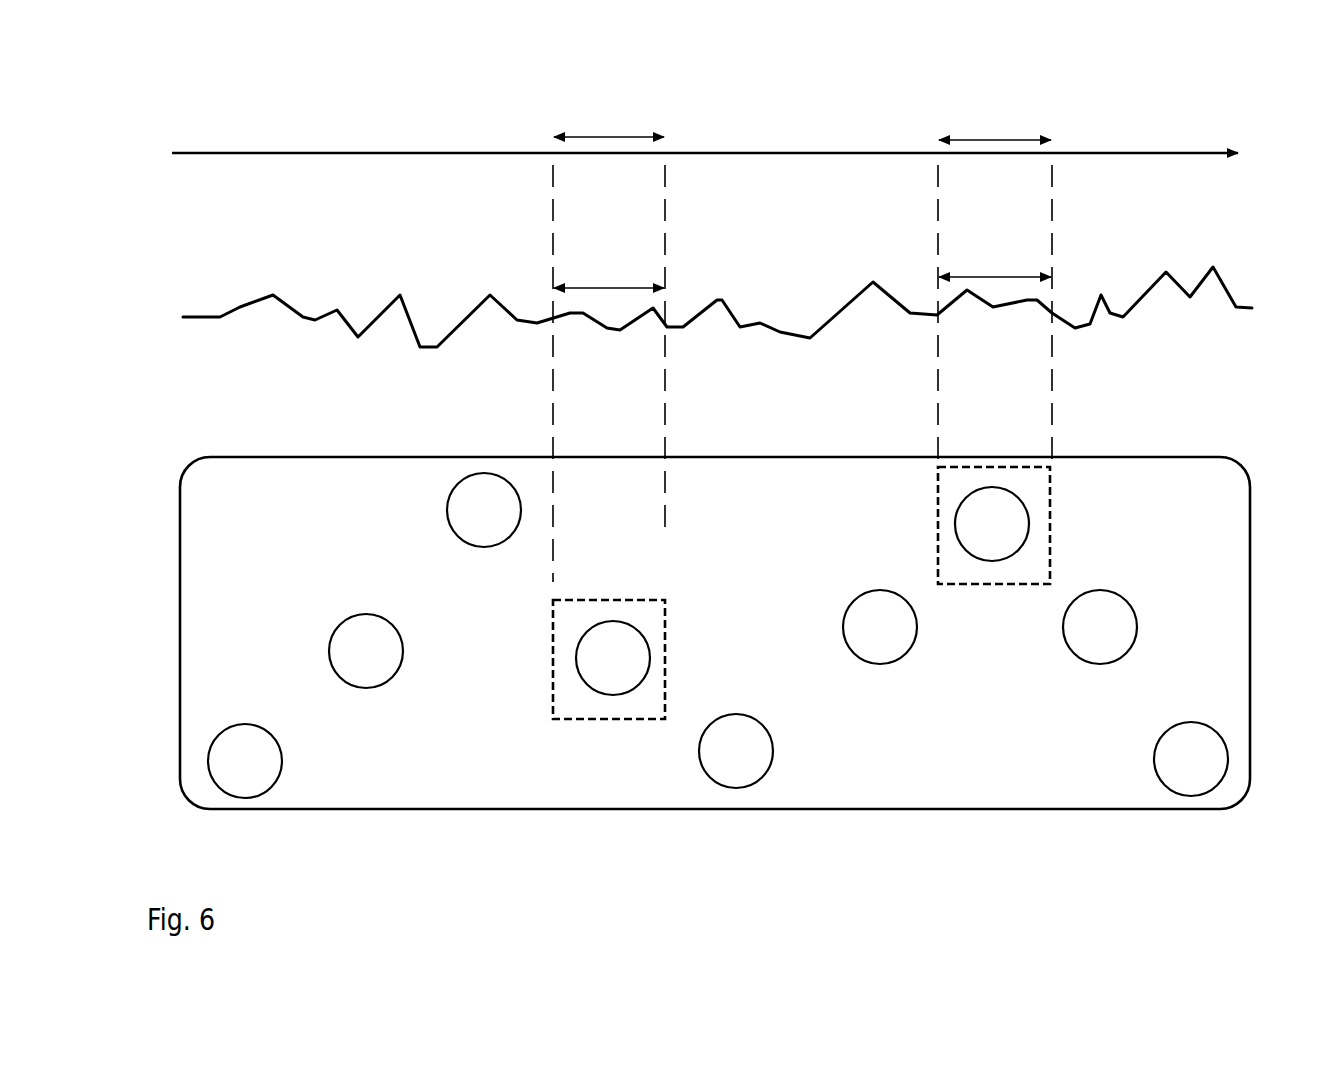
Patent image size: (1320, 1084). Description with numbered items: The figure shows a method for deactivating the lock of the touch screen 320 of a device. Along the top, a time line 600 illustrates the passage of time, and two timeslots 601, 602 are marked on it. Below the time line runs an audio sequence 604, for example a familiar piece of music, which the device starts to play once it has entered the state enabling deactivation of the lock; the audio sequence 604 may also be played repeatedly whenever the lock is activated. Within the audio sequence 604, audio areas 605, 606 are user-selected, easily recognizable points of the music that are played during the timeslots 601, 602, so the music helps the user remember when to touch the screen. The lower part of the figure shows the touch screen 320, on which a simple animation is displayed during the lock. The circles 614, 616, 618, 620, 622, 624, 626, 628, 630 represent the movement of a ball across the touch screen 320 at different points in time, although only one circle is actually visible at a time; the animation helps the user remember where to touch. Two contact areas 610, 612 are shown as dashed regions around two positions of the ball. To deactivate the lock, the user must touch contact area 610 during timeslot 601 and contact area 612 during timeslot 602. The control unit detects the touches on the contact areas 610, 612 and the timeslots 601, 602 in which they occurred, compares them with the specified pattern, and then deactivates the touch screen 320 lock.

The time line 600 is at (220, 153).
The timeslot 601 is at (592, 137).
The timeslot 602 is at (974, 140).
The audio sequence 604 is at (238, 312).
The audio area 605 is at (573, 288).
The audio area 606 is at (955, 277).
The touch screen 320 is at (220, 457).
The contact area 610 is at (572, 722).
The contact area 612 is at (953, 586).
The circle 614 is at (219, 732).
The circle 616 is at (344, 624).
The circle 618 is at (455, 485).
The circle 620 is at (619, 623).
The circle 622 is at (716, 717).
The circle 624 is at (849, 606).
The circle 626 is at (963, 502).
The circle 628 is at (1074, 601).
The circle 630 is at (1158, 740).